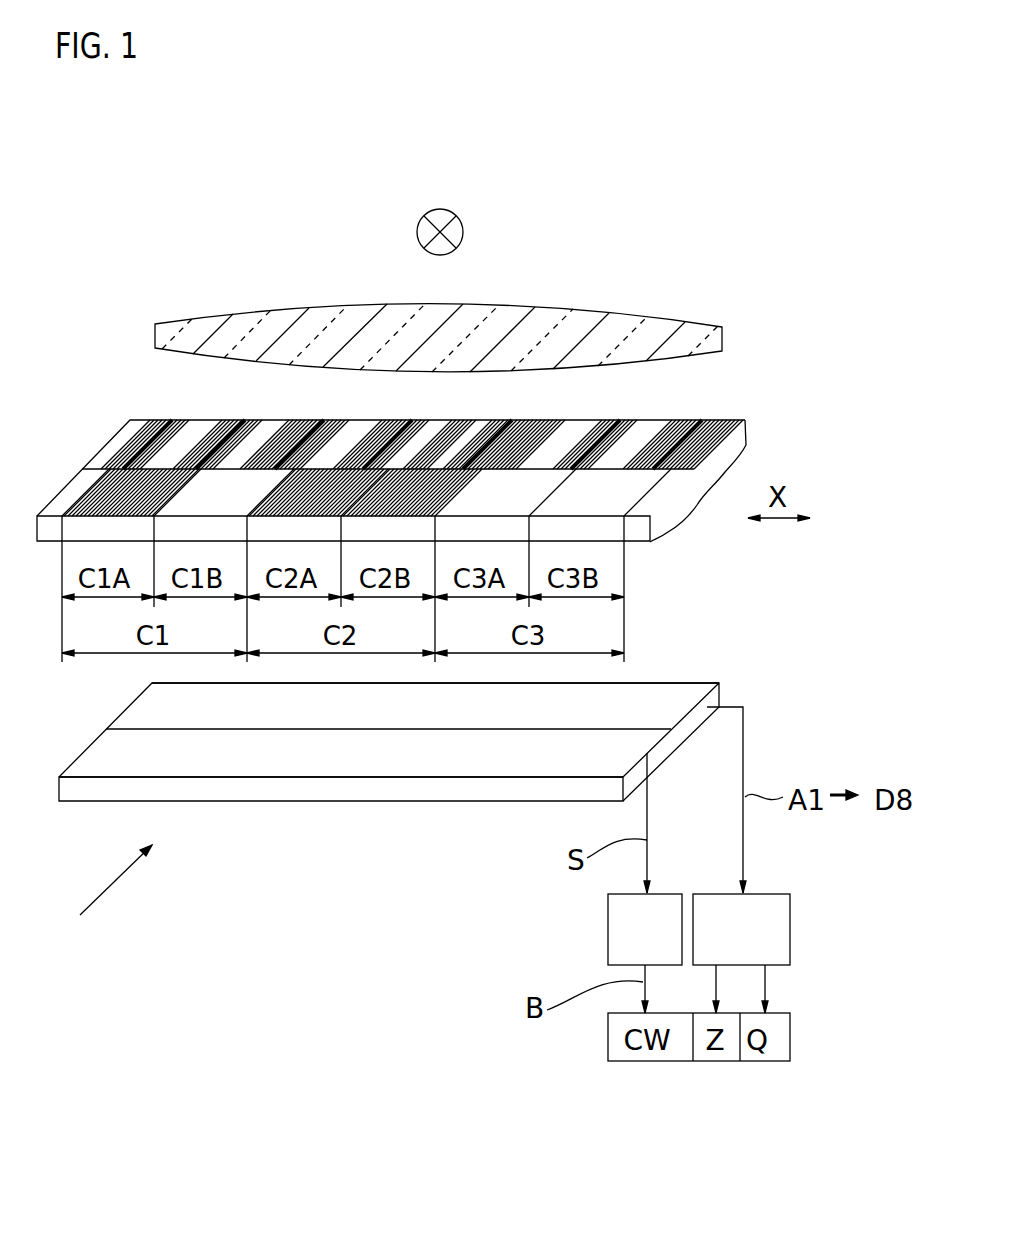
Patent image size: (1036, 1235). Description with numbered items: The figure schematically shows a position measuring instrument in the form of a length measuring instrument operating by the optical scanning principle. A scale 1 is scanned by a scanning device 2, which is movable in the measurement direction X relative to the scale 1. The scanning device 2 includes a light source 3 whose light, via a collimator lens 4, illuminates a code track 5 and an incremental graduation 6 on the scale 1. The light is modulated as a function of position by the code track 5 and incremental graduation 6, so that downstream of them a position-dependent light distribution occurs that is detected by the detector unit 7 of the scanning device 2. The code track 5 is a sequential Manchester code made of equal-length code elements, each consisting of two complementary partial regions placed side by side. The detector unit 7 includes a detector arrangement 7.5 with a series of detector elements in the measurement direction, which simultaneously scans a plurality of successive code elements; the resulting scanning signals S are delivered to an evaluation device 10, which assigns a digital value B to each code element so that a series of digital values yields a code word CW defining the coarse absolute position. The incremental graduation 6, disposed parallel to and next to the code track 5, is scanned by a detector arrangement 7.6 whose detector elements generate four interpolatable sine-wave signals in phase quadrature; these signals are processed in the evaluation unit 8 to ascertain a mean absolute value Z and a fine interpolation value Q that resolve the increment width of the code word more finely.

The scale 1 is at (422, 518).
The scanning device 2 is at (103, 898).
The light source 3 is at (463, 231).
The collimator lens 4 is at (590, 325).
The code track 5 is at (647, 509).
The incremental graduation 6 is at (722, 430).
The detector unit 7 is at (382, 745).
The detector arrangement 7.5 is at (468, 768).
The detector arrangement 7.6 is at (645, 692).
The evaluation unit 8 is at (773, 930).
The evaluation device 10 is at (625, 932).